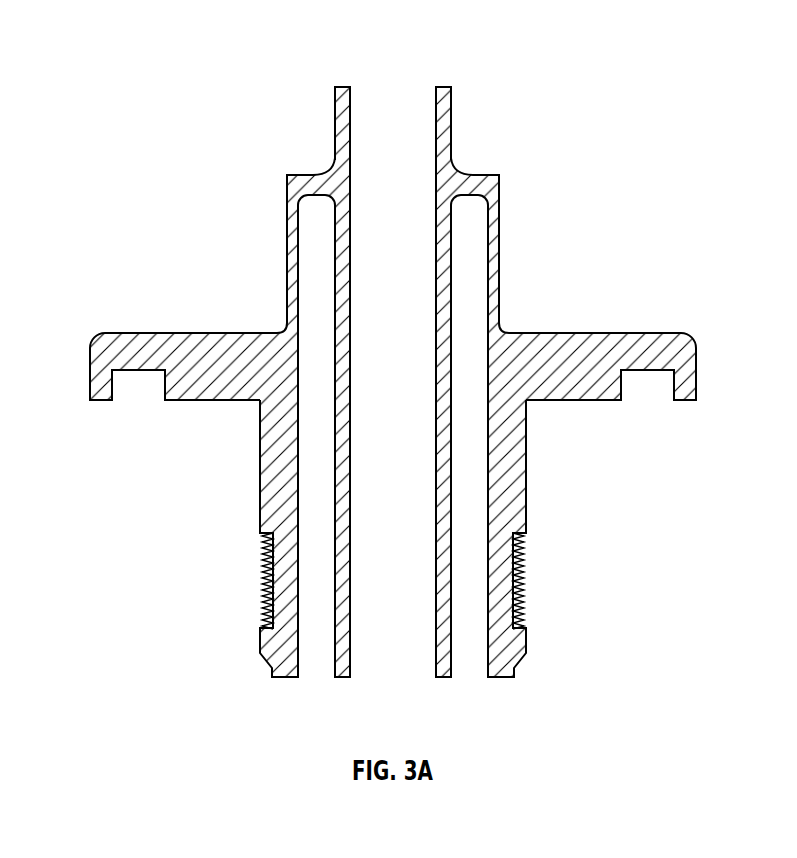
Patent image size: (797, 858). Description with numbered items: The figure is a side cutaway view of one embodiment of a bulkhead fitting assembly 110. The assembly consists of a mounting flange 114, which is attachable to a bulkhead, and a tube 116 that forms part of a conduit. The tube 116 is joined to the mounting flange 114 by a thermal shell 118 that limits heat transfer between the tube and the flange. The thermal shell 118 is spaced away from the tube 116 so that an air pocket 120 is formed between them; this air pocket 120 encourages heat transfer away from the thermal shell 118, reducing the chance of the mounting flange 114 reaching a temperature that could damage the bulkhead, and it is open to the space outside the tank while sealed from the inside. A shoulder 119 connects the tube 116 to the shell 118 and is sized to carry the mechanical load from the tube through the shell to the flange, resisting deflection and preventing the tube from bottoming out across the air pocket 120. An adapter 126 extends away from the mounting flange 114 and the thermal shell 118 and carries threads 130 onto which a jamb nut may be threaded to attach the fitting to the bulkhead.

The bulkhead fitting assembly 110 is at (188, 32).
The mounting flange 114 is at (88, 395).
The tube 116 is at (440, 472).
The thermal shell 118 is at (287, 233).
The shoulder 119 is at (315, 180).
The air pocket 120 is at (315, 684).
The adapter 126 is at (526, 461).
The threads 130 is at (521, 577).